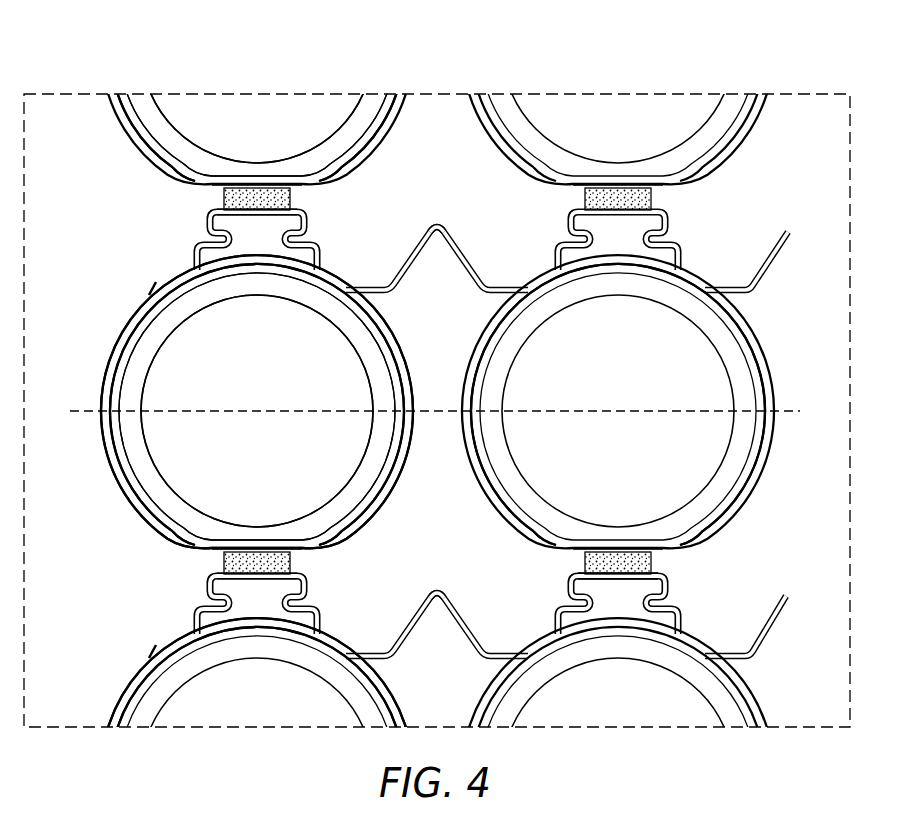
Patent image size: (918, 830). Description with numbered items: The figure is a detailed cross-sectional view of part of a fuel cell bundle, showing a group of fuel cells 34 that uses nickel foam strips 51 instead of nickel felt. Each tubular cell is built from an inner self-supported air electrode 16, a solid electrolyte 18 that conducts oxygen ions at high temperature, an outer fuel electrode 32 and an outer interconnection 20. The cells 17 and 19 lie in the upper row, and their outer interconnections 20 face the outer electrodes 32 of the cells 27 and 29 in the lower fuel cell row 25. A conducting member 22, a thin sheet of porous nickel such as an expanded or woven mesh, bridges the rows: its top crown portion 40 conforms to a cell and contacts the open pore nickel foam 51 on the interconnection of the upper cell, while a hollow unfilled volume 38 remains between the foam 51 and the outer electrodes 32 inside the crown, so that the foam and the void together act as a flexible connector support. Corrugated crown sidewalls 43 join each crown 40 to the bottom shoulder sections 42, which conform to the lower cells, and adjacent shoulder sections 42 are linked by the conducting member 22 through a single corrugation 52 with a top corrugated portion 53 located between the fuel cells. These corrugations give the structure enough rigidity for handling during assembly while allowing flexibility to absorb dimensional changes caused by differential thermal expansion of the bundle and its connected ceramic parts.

The inner self-supported air electrode 16 is at (358, 120).
The fuel cell 17 is at (130, 172).
The solid electrolyte 18 is at (358, 142).
The fuel cell 19 is at (752, 158).
The outer interconnection 20 is at (250, 186).
The conducting member 22 is at (382, 662).
The fuel cell row 25 is at (438, 412).
The fuel cell 27 is at (103, 333).
The fuel cell 29 is at (480, 502).
The outer fuel electrode 32 is at (128, 112).
The group of fuel cells 34 is at (91, 94).
The hollow unfilled volume 38 is at (252, 592).
The crown portion 40 is at (256, 216).
The bottom shoulder section 42 is at (342, 268).
The corrugated crown sidewall 43 is at (196, 249).
The nickel foam strip 51 is at (222, 196).
The single corrugation 52 is at (468, 257).
The top corrugated portion 53 is at (445, 215).